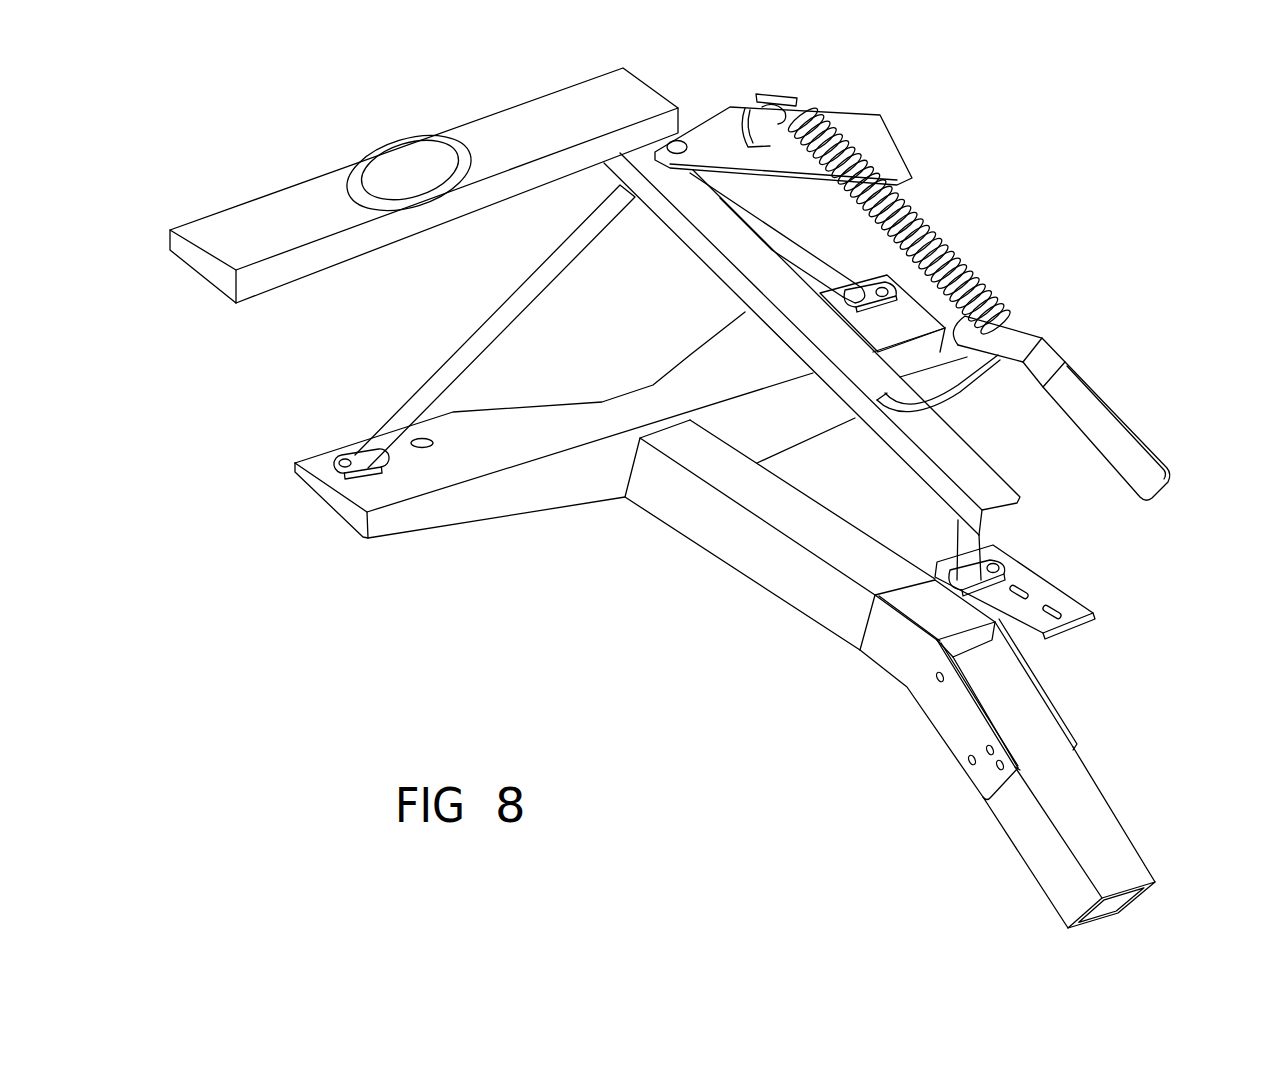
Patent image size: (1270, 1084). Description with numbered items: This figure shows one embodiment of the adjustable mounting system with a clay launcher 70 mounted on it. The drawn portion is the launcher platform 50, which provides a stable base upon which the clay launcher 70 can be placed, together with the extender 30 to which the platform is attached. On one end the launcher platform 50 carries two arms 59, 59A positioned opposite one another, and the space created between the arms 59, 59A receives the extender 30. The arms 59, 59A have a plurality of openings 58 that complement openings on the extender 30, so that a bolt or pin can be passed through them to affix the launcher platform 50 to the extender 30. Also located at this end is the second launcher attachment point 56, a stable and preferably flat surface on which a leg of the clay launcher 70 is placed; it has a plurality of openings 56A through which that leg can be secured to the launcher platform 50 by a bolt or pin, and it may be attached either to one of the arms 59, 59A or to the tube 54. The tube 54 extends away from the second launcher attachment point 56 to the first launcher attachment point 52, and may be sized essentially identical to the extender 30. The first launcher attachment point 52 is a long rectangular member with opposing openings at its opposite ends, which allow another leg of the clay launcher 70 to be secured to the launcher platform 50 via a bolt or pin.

The extender 30 is at (1146, 852).
The launcher platform 50 is at (312, 548).
The first launcher attachment point 52 is at (690, 372).
The tube 54 is at (737, 543).
The second launcher attachment point 56 is at (1092, 608).
The openings 56A is at (1020, 584).
The openings 58 is at (420, 438).
The arm 59 is at (928, 705).
The arm 59A is at (1047, 700).
The clay launcher 70 is at (925, 166).